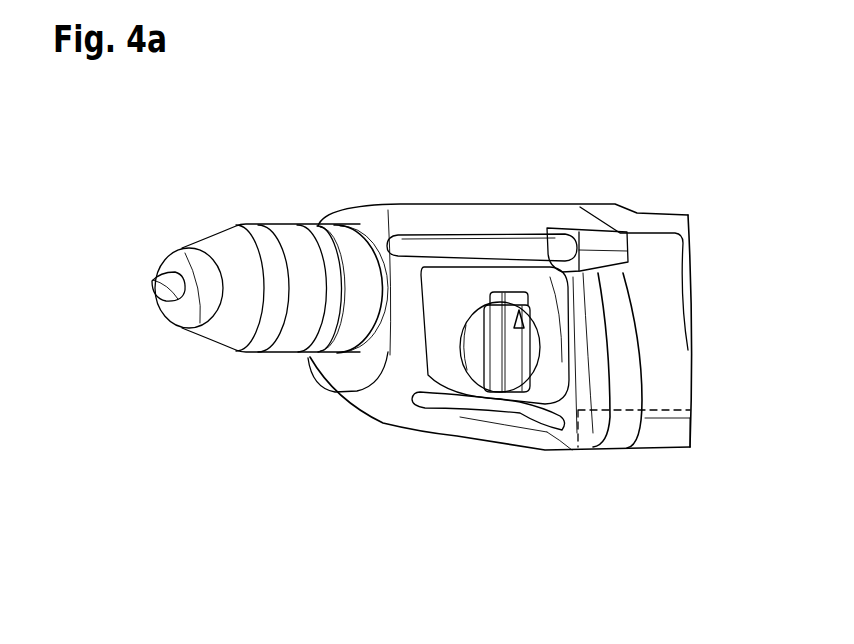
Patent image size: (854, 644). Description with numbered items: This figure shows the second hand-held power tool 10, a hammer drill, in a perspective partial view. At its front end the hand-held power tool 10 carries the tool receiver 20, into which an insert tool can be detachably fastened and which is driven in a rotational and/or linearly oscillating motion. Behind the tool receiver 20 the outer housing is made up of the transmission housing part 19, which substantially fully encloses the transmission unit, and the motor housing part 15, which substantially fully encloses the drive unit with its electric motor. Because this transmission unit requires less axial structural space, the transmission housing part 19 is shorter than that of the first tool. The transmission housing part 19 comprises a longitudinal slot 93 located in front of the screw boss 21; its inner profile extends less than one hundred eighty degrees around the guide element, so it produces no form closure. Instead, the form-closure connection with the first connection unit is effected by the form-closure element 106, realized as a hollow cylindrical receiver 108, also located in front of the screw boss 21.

The hand-held power tool 10 is at (530, 162).
The tool receiver 20 is at (237, 208).
The transmission housing part 19 is at (462, 222).
The motor housing part 15 is at (645, 221).
The longitudinal slot 93 is at (460, 418).
The form-closure element 106 is at (547, 434).
The hollow cylindrical receiver 108 is at (548, 478).
The screw boss 21 is at (655, 450).